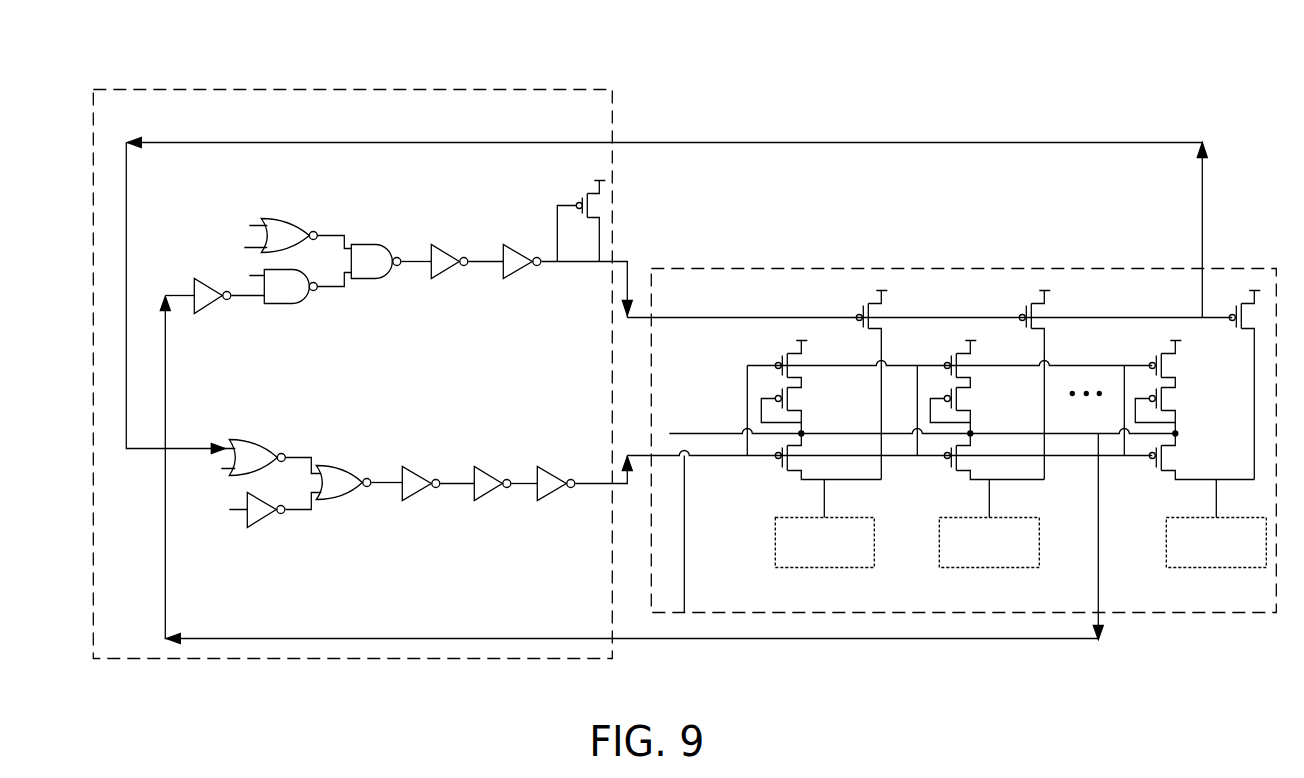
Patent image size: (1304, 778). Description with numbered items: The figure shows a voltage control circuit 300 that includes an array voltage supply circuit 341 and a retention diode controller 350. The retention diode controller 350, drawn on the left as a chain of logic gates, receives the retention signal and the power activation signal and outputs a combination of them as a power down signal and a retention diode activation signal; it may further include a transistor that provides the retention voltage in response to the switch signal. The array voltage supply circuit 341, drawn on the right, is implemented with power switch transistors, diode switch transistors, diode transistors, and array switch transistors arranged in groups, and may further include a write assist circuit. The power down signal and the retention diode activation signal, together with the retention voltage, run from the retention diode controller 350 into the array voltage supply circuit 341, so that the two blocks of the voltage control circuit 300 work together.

The voltage control circuit 300 is at (740, 36).
The retention diode controller 350 is at (428, 88).
The array voltage supply circuit 341 is at (781, 268).